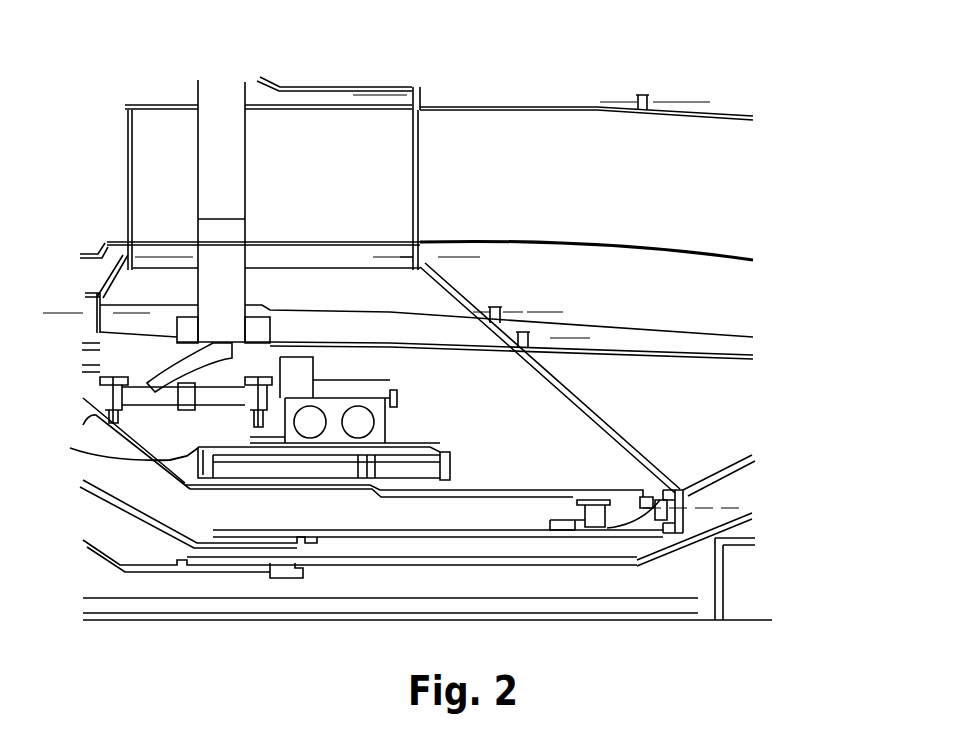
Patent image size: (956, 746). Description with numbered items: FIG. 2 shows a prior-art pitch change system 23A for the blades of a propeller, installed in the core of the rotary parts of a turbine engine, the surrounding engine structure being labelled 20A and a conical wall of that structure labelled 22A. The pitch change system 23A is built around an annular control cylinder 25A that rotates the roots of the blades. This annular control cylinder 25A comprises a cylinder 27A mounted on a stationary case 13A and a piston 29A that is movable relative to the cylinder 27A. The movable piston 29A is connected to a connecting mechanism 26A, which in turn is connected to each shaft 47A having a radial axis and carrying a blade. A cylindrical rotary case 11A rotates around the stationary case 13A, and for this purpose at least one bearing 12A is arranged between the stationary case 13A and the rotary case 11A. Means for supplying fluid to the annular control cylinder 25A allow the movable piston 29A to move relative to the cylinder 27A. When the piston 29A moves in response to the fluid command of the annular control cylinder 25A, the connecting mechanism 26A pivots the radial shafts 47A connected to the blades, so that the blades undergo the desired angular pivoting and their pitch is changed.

The cylindrical rotary case 11A is at (720, 480).
The bearing 12A is at (598, 500).
The stationary case 13A is at (227, 487).
The turbine engine section 20A is at (404, 224).
The conical wall 22A is at (443, 300).
The pitch change system 23A is at (168, 442).
The annular control cylinder 25A is at (448, 442).
The connecting mechanism 26A is at (145, 364).
The cylinder 27A is at (517, 495).
The movable piston 29A is at (172, 462).
The shaft with a radial axis 47A is at (232, 173).